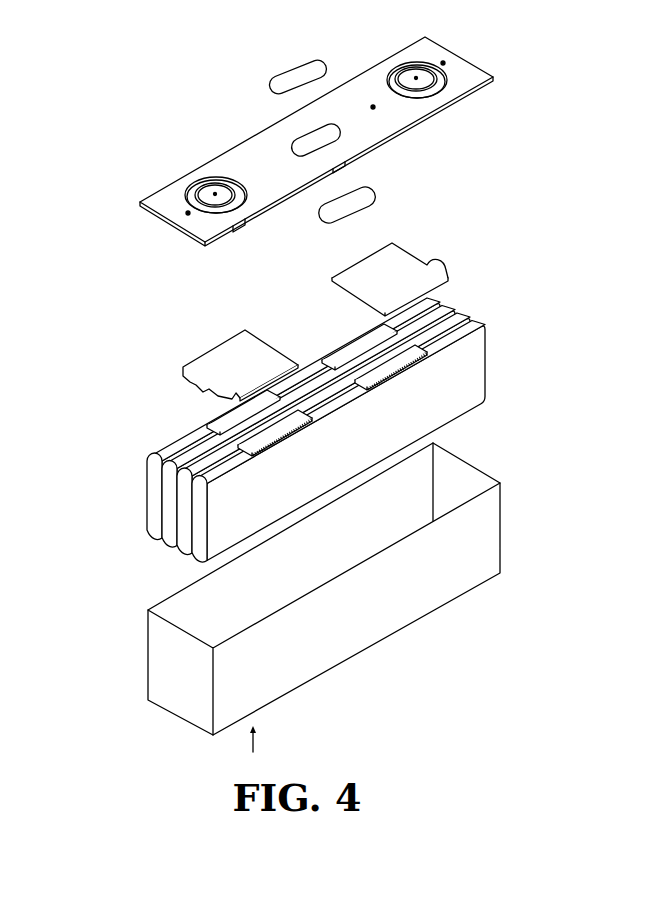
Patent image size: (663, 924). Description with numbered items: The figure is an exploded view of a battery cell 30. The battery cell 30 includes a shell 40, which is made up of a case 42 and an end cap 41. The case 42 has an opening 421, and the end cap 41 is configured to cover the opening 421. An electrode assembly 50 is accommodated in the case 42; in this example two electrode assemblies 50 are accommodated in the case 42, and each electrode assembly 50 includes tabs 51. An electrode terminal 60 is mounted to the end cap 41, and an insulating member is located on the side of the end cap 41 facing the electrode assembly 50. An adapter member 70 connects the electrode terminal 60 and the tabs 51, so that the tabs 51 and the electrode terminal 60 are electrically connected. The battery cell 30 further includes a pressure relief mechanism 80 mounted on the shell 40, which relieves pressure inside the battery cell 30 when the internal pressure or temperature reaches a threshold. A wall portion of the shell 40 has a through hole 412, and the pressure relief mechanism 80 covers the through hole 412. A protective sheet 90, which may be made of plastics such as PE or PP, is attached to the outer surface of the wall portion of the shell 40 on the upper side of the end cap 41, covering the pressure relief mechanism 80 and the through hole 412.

The battery cell 30 is at (167, 43).
The shell 40 is at (55, 448).
The end cap 41 is at (140, 203).
The through hole 412 is at (312, 145).
The case 42 is at (168, 657).
The opening 421 is at (458, 472).
The electrode assembly 50 is at (465, 385).
The tabs 51 is at (338, 352).
The electrode terminal 60 is at (215, 183).
The adapter member 70 is at (417, 263).
The pressure relief mechanism 80 is at (350, 203).
The protective sheet 90 is at (306, 72).